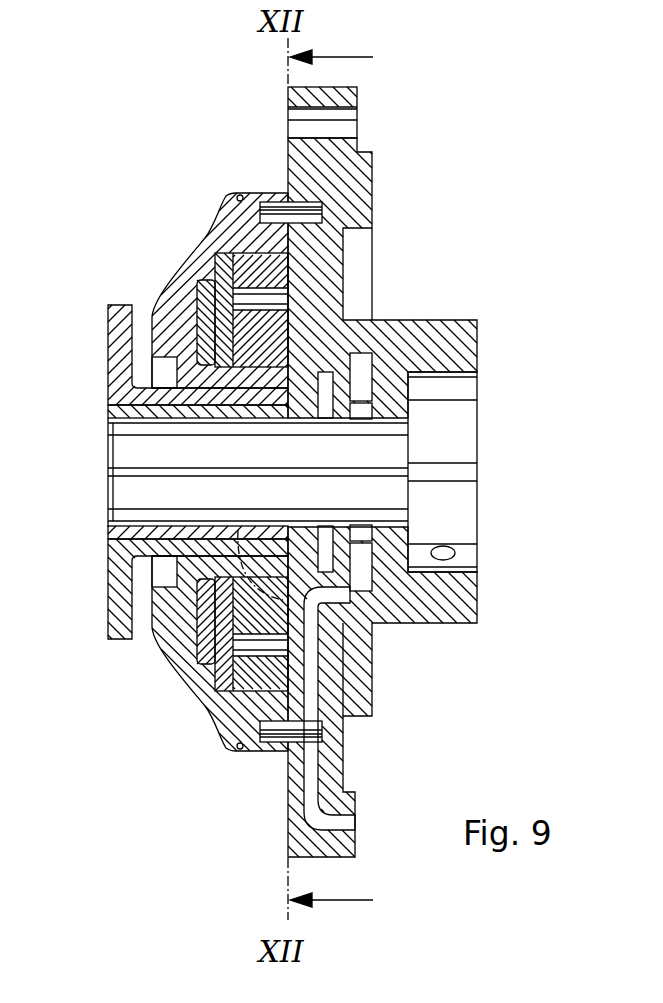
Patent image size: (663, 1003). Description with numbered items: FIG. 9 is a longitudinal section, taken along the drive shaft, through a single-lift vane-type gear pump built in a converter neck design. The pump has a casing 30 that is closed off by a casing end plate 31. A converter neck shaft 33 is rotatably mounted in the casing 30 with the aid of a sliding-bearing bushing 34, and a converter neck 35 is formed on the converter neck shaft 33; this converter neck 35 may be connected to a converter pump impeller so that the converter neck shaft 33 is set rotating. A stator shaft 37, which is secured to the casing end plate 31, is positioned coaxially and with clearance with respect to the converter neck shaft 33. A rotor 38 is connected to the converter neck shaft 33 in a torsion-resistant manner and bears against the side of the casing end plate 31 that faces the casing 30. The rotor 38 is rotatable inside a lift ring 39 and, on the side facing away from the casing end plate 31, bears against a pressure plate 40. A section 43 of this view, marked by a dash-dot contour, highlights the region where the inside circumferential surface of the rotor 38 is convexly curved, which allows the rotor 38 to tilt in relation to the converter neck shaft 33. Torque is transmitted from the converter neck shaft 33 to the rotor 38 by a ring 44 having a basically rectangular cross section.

The casing 30 is at (237, 225).
The casing end plate 31 is at (317, 282).
The converter neck shaft 33 is at (170, 406).
The sliding-bearing bushing 34 is at (195, 412).
The converter neck 35 is at (118, 342).
The stator shaft 37 is at (163, 534).
The rotor 38 is at (247, 617).
The lift ring 39 is at (267, 656).
The pressure plate 40 is at (248, 597).
The section 43 is at (238, 530).
The ring 44 is at (345, 627).